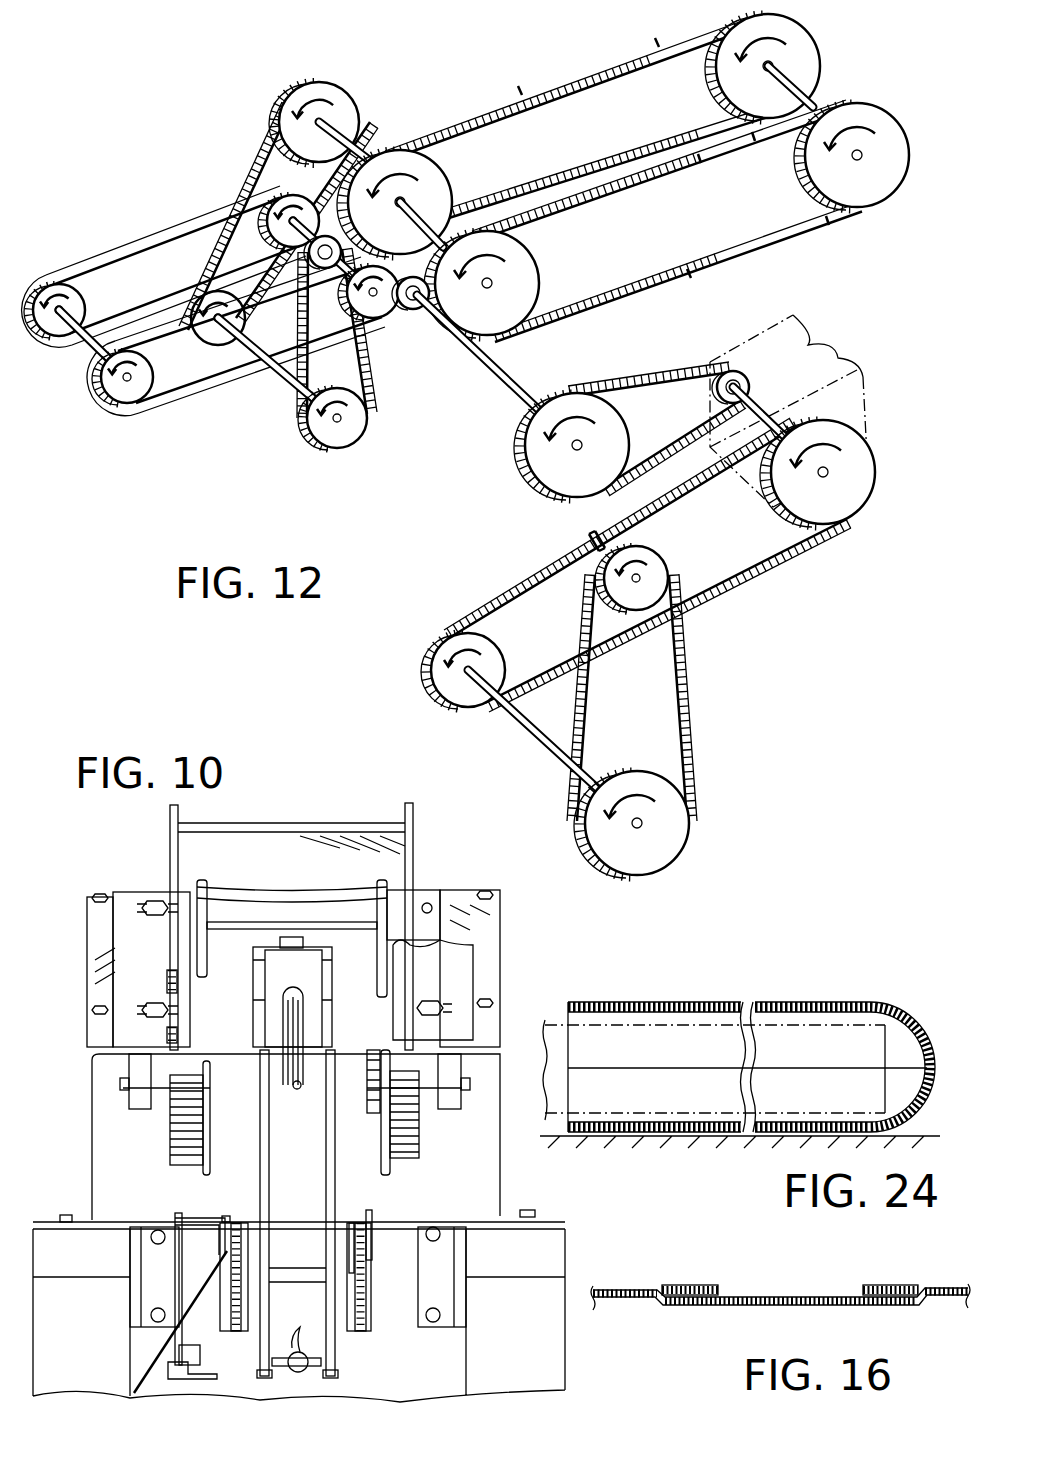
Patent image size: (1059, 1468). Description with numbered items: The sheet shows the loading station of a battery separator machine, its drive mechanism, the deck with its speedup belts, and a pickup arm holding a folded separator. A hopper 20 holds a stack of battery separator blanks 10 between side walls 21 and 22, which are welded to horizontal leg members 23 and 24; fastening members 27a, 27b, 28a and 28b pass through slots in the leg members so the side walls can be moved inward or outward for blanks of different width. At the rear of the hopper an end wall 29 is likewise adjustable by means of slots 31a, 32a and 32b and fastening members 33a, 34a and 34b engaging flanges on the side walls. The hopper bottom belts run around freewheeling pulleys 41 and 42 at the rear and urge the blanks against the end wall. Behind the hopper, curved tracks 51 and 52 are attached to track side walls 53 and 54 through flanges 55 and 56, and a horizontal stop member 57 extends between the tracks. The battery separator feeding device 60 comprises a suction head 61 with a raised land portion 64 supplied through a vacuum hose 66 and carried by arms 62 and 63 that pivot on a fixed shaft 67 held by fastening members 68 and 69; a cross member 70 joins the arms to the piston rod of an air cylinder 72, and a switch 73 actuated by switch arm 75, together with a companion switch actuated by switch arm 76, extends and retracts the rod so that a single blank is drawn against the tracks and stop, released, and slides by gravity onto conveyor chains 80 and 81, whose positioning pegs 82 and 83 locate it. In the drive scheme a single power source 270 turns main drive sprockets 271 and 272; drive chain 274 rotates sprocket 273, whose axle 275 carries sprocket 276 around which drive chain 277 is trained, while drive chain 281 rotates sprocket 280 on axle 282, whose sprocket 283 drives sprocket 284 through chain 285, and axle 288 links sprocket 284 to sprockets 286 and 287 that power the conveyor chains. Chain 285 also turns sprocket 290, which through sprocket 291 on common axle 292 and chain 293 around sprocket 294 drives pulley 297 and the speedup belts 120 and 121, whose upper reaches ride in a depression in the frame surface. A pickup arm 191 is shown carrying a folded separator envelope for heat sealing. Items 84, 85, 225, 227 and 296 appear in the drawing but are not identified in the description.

In FIG. 10, the battery separator blank 10 is at (337, 837).
In FIG. 24, the battery separator blank 10 is at (884, 991).
In FIG. 10, the hopper 20 is at (300, 791).
In FIG. 10, the side wall 21 is at (413, 815).
In FIG. 10, the side wall 22 is at (170, 815).
In FIG. 10, the horizontal leg member 23 is at (483, 926).
In FIG. 10, the horizontal leg member 24 is at (87, 947).
In FIG. 10, the fastening member 27a is at (493, 1003).
In FIG. 10, the fastening member 27b is at (488, 891).
In FIG. 10, the fastening member 28a is at (92, 1010).
In FIG. 10, the fastening member 28b is at (100, 894).
In FIG. 10, the end wall 29 is at (470, 963).
In FIG. 10, the slot 31a is at (452, 1006).
In FIG. 10, the slot 32a is at (147, 1003).
In FIG. 10, the slot 32b is at (142, 905).
In FIG. 10, the fastening member 33a is at (492, 1018).
In FIG. 10, the fastening member 34a is at (142, 1012).
In FIG. 10, the fastening member 34b is at (155, 901).
In FIG. 10, the freewheeling pulley 41 is at (372, 1113).
In FIG. 10, the freewheeling pulley 42 is at (210, 1100).
In FIG. 10, the curved track 51 is at (381, 1165).
In FIG. 10, the curved track 52 is at (210, 1168).
In FIG. 10, the track side wall 53 is at (415, 975).
In FIG. 10, the track side wall 54 is at (180, 1027).
In FIG. 10, the flange 55 is at (420, 1138).
In FIG. 10, the flange 56 is at (172, 1128).
In FIG. 10, the horizontal stop member 57 is at (240, 929).
In FIG. 10, the battery separator feeding device 60 is at (245, 1010).
In FIG. 10, the suction head 61 is at (322, 967).
In FIG. 10, the arm 62 is at (330, 990).
In FIG. 10, the arm 63 is at (257, 973).
In FIG. 10, the raised land portion 64 is at (292, 937).
In FIG. 10, the vacuum hose 66 is at (296, 1090).
In FIG. 12, the fixed shaft 67 is at (810, 97).
In FIG. 10, the fixed shaft 67 is at (295, 1275).
In FIG. 10, the fastening member 68 is at (454, 1290).
In FIG. 10, the fastening member 69 is at (151, 1290).
In FIG. 10, the cross member 70 is at (275, 1372).
In FIG. 10, the air cylinder 72 is at (303, 1372).
In FIG. 10, the switch 73 is at (188, 1367).
In FIG. 10, the switch arm 75 is at (150, 1372).
In FIG. 10, the switch arm 76 is at (174, 1218).
In FIG. 12, the conveyor chain 80 is at (650, 150).
In FIG. 10, the conveyor chain 80 is at (360, 1333).
In FIG. 12, the conveyor chain 81 is at (723, 247).
In FIG. 10, the conveyor chain 81 is at (235, 1333).
In FIG. 12, the positioning peg 82 is at (520, 90).
In FIG. 10, the positioning peg 82 is at (372, 1215).
In FIG. 12, the positioning peg 83 is at (687, 273).
In FIG. 10, the positioning peg 83 is at (66, 1215).
In FIG. 12, the pulley 84 is at (803, 45).
In FIG. 10, the pulley 84 is at (352, 1228).
In FIG. 12, the pulley 85 is at (867, 190).
In FIG. 10, the pulley 85 is at (245, 1333).
In FIG. 12, the speedup belt 120 is at (140, 295).
In FIG. 16, the speedup belt 120 is at (875, 1285).
In FIG. 12, the speedup belt 121 is at (175, 378).
In FIG. 16, the speedup belt 121 is at (682, 1285).
In FIG. 24, the pickup arm 191 is at (793, 1025).
In FIG. 12, the cleat 225 is at (590, 537).
In FIG. 12, the pulley 227 is at (665, 560).
In FIG. 12, the power source 270 is at (827, 343).
In FIG. 12, the main drive sprocket 271 is at (850, 492).
In FIG. 12, the main drive sprocket 272 is at (737, 370).
In FIG. 12, the sprocket 273 is at (492, 650).
In FIG. 12, the drive chain 274 is at (707, 500).
In FIG. 12, the axle 275 is at (533, 733).
In FIG. 12, the sprocket 276 is at (667, 835).
In FIG. 12, the drive chain 277 is at (667, 693).
In FIG. 12, the sprocket 280 is at (550, 475).
In FIG. 12, the drive chain 281 is at (657, 430).
In FIG. 12, the axle 282 is at (512, 382).
In FIG. 12, the sprocket 283 is at (412, 307).
In FIG. 12, the sprocket 284 is at (337, 109).
In FIG. 12, the chain 285 is at (258, 192).
In FIG. 12, the sprocket 286 is at (430, 173).
In FIG. 12, the sprocket 287 is at (530, 263).
In FIG. 12, the axle 288 is at (433, 233).
In FIG. 12, the sprocket 290 is at (243, 317).
In FIG. 12, the sprocket 291 is at (337, 440).
In FIG. 12, the common axle 292 is at (292, 382).
In FIG. 12, the chain 293 is at (365, 382).
In FIG. 12, the sprocket 294 is at (310, 258).
In FIG. 12, the pulley 296 is at (315, 206).
In FIG. 12, the pulley 297 is at (370, 312).